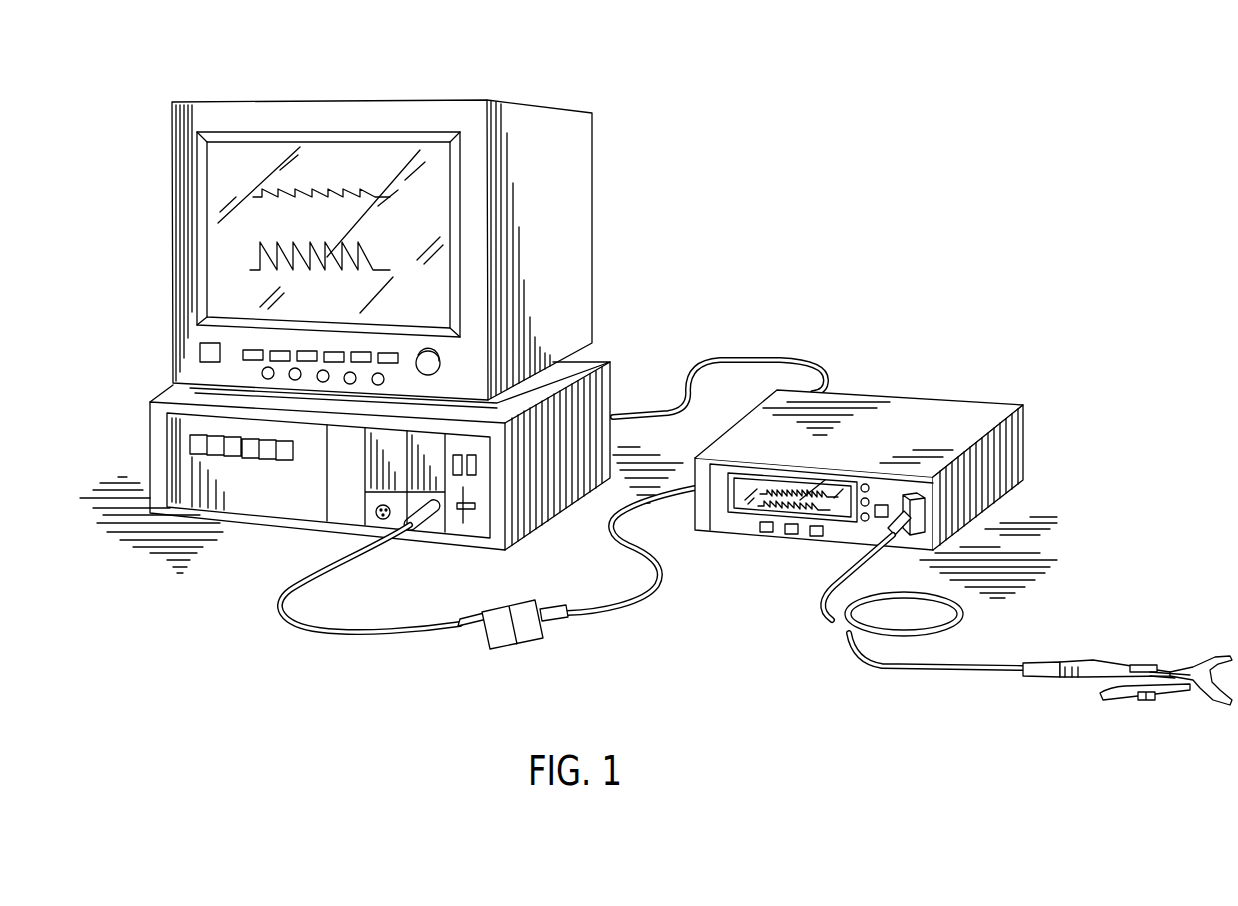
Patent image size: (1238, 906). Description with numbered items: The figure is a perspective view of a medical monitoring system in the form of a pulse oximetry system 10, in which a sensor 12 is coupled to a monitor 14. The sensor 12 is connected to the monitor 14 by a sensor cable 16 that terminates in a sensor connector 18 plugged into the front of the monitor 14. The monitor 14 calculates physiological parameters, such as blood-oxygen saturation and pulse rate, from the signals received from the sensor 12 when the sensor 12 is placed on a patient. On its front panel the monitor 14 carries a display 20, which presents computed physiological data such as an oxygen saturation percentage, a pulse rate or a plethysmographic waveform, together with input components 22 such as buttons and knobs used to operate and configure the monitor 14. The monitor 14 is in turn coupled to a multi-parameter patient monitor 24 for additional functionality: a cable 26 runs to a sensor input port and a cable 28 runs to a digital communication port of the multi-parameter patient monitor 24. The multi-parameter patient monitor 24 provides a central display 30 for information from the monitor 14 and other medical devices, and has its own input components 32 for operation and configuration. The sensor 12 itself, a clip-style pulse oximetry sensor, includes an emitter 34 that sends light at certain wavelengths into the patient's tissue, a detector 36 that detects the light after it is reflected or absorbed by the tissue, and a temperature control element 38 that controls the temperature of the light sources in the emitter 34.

The pulse oximetry system 10 is at (797, 118).
The sensor 12 is at (1119, 687).
The monitor 14 is at (925, 398).
The sensor cable 16 is at (850, 657).
The sensor connector 18 is at (922, 517).
The display 20 is at (820, 480).
The input components 22 is at (813, 538).
The multi-parameter patient monitor 24 is at (540, 113).
The cable 26 is at (603, 610).
The cable 28 is at (767, 358).
The central display 30 is at (223, 258).
The input components 32 is at (283, 462).
The emitter 34 is at (1167, 673).
The detector 36 is at (1140, 703).
The temperature control element 38 is at (1122, 665).